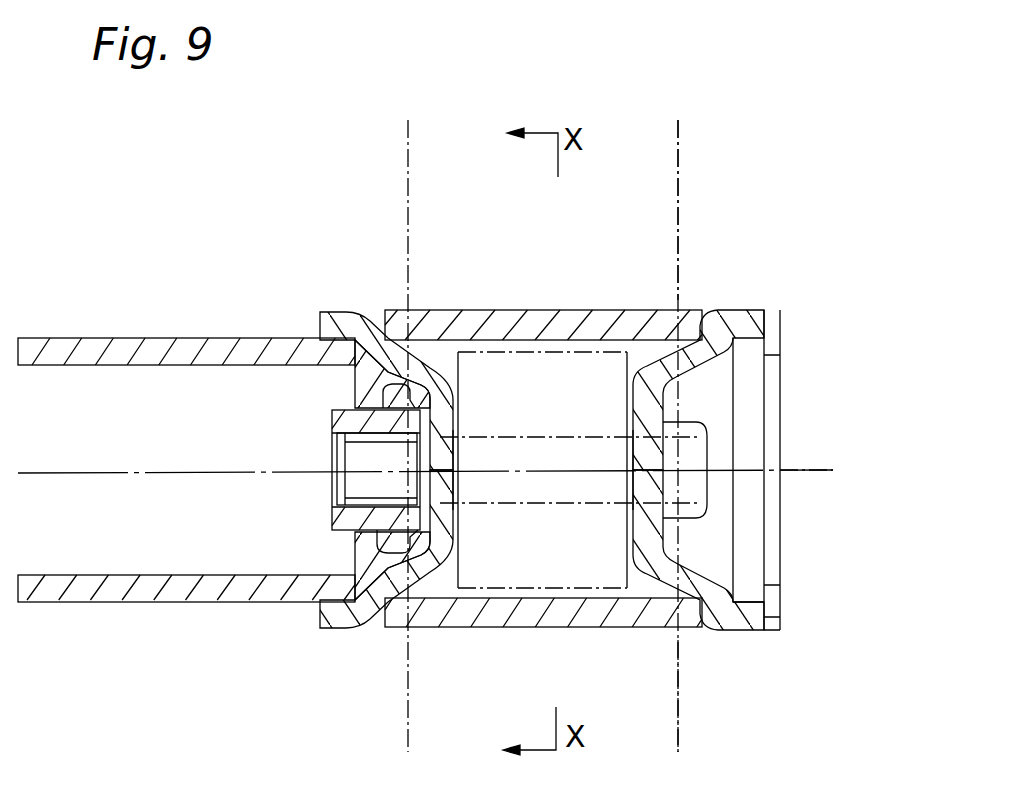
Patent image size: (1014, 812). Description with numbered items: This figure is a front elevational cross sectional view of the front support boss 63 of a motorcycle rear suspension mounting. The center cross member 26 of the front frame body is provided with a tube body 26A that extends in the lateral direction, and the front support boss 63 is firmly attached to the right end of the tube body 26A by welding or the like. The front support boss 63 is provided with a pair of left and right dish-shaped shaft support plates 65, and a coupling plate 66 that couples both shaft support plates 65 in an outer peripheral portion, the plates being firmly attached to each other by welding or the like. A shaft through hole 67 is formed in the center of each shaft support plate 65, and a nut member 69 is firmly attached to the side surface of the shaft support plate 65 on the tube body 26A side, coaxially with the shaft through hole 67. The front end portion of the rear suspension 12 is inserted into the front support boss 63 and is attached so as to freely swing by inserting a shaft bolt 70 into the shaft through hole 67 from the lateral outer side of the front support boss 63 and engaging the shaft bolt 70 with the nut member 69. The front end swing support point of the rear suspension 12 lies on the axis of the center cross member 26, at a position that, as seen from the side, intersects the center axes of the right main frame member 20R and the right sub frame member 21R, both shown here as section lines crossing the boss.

The center cross member 26 is at (258, 215).
The tube body 26A is at (182, 338).
The shaft support plate 65 is at (340, 311).
The coupling plate 66 is at (488, 310).
The shaft through hole 67 is at (458, 455).
The nut member 69 is at (332, 412).
The shaft bolt 70 is at (705, 466).
The front support boss 63 is at (777, 275).
The rear suspension 12 is at (578, 592).
The right main frame member 20R is at (690, 153).
The right sub frame member 21R is at (680, 708).